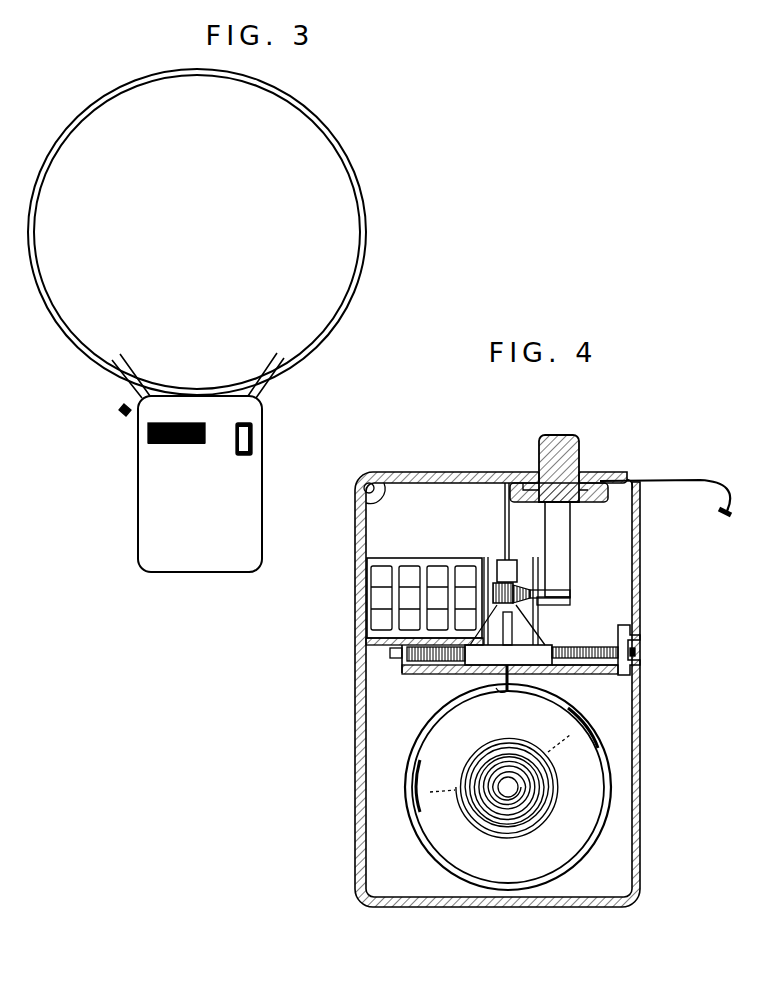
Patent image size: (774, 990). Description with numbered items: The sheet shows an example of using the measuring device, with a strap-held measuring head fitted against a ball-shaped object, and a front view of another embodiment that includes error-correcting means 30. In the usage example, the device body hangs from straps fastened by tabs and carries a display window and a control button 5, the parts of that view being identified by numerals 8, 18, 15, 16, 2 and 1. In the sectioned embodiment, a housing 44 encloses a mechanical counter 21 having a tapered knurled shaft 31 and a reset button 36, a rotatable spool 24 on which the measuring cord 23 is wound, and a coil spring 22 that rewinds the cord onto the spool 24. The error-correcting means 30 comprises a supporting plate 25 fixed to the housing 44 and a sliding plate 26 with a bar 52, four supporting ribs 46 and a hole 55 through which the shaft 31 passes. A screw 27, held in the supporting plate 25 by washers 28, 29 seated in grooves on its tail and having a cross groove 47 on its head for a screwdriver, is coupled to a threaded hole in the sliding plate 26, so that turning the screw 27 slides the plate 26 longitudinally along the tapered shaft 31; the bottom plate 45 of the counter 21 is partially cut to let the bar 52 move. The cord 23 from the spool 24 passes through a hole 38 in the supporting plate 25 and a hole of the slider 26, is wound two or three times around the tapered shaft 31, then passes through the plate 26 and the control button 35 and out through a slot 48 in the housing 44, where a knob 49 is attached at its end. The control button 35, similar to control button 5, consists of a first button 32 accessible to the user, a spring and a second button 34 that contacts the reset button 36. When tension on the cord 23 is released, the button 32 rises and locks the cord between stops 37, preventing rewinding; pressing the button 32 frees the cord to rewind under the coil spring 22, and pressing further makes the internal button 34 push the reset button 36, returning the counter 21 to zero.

In FIG. 3, the push button 1 is at (250, 443).
In FIG. 3, the counter display window 2 is at (150, 432).
In FIG. 3, the control button 5 is at (282, 387).
In FIG. 3, the ball 8 is at (331, 140).
In FIG. 3, the strap fastening tab 15 is at (124, 412).
In FIG. 3, the digit wheels display 16 is at (162, 443).
In FIG. 3, the counter housing 18 is at (195, 560).
In FIG. 4, the mechanical counter 21 is at (360, 578).
In FIG. 4, the coil spring 22 is at (515, 834).
In FIG. 4, the measuring cord 23 is at (506, 521).
In FIG. 4, the rotatable spool 24 is at (413, 818).
In FIG. 4, the supporting plate 25 is at (396, 666).
In FIG. 4, the sliding plate 26 is at (538, 654).
In FIG. 4, the screw 27 is at (630, 624).
In FIG. 4, the washer 28 is at (412, 675).
In FIG. 4, the washer 29 is at (389, 658).
In FIG. 4, the error-correcting means 30 is at (556, 668).
In FIG. 4, the tapered knurled shaft 31 is at (518, 589).
In FIG. 4, the first button 32 is at (570, 436).
In FIG. 4, the second button 34 is at (569, 536).
In FIG. 4, the control button 35 is at (538, 446).
In FIG. 4, the reset button 36 is at (571, 597).
In FIG. 4, the stops 37 is at (588, 473).
In FIG. 4, the hole 38 is at (528, 673).
In FIG. 4, the housing 44 is at (357, 781).
In FIG. 4, the bottom plate 45 is at (372, 650).
In FIG. 4, the ribs 46 is at (497, 638).
In FIG. 4, the cross groove 47 is at (636, 652).
In FIG. 4, the slot 48 is at (638, 485).
In FIG. 4, the knob 49 is at (732, 513).
In FIG. 4, the bar 52 is at (503, 563).
In FIG. 4, the hole 55 is at (513, 579).